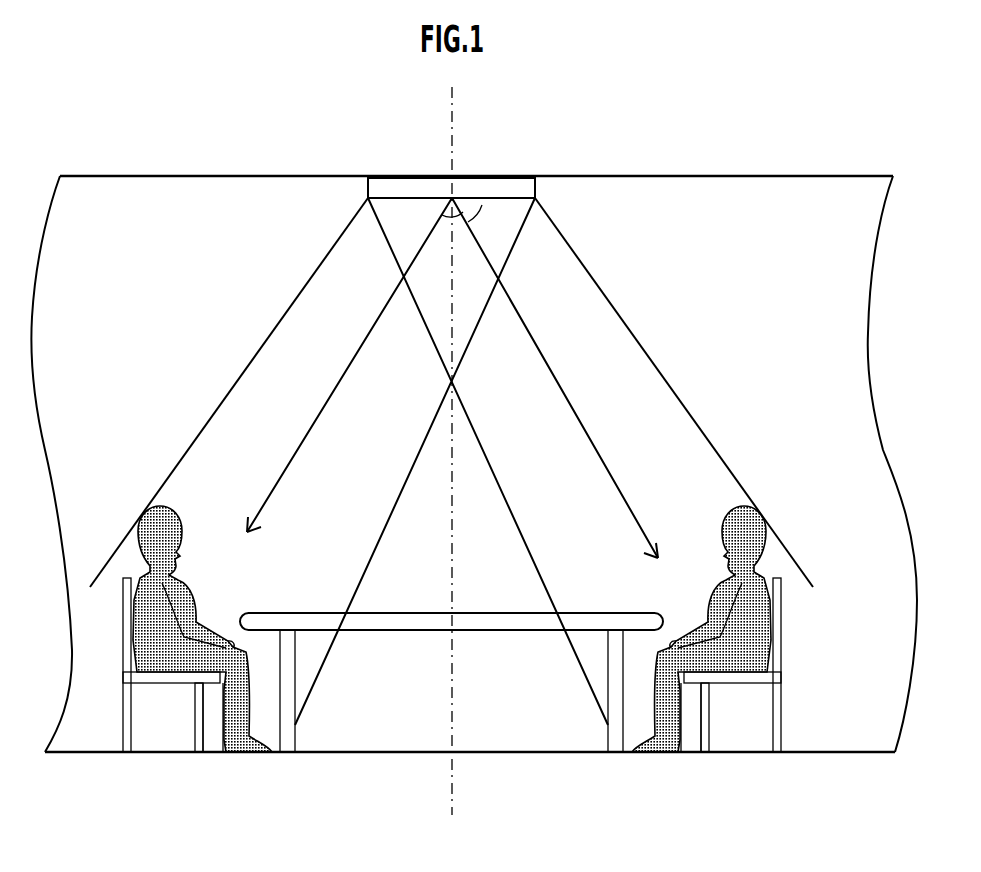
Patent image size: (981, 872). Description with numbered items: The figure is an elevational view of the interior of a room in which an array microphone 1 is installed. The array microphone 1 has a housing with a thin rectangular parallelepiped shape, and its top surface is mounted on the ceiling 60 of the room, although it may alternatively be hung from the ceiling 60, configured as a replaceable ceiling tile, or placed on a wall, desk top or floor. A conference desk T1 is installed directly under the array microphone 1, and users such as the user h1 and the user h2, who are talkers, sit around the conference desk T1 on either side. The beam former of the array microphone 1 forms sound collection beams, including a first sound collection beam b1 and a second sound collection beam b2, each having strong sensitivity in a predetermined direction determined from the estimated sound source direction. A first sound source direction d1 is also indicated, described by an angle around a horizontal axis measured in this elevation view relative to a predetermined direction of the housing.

The array microphone 1 is at (387, 174).
The ceiling 60 is at (767, 180).
The first sound collection beam b1 is at (683, 405).
The second sound collection beam b2 is at (236, 380).
The first sound source direction d1 is at (543, 350).
The conference desk T1 is at (378, 626).
The user h1 is at (752, 635).
The user h2 is at (182, 612).